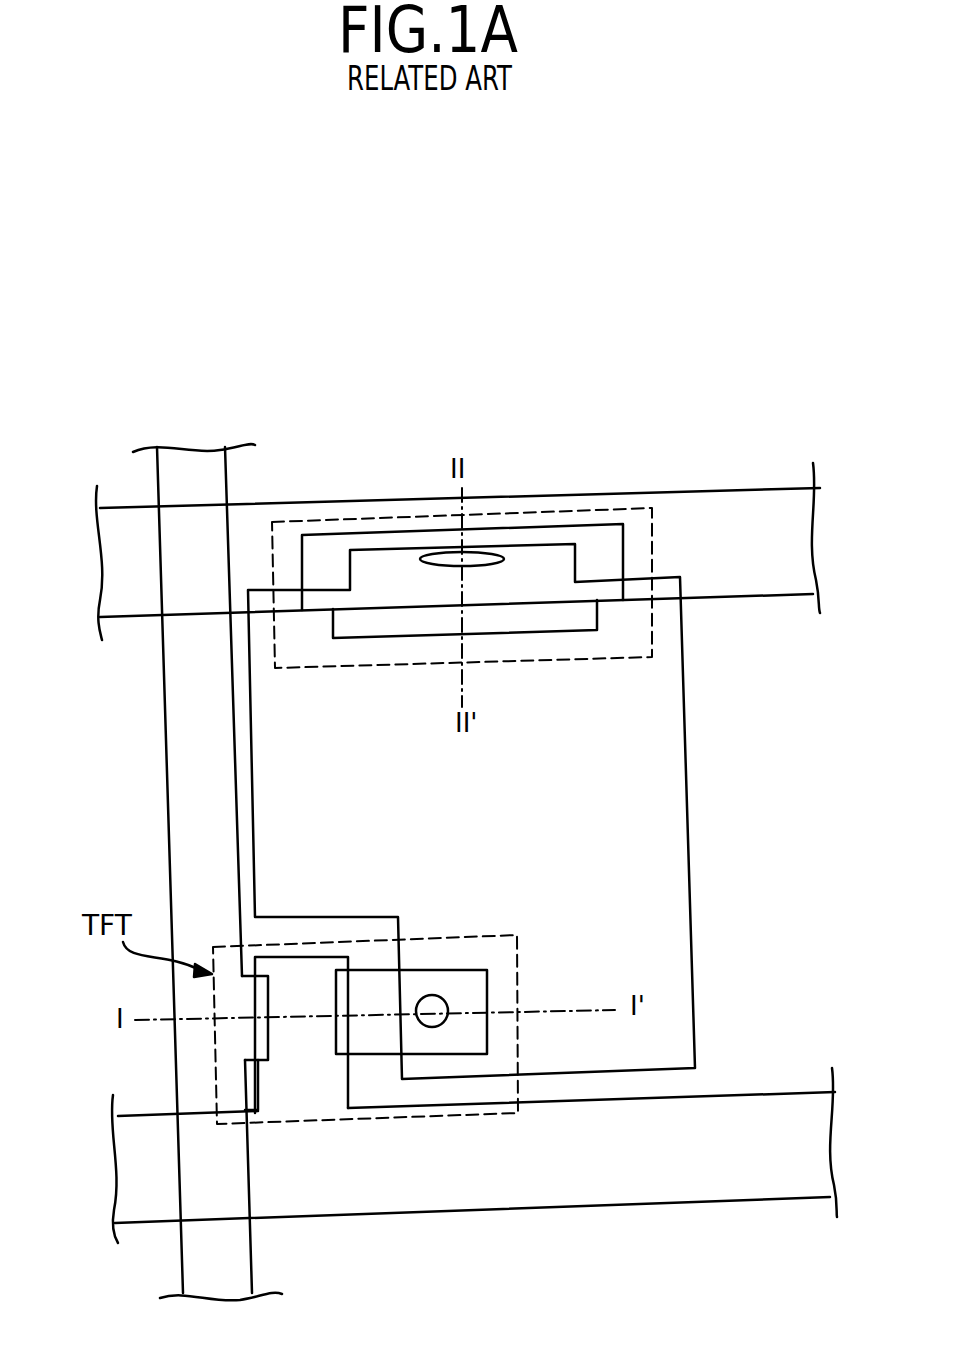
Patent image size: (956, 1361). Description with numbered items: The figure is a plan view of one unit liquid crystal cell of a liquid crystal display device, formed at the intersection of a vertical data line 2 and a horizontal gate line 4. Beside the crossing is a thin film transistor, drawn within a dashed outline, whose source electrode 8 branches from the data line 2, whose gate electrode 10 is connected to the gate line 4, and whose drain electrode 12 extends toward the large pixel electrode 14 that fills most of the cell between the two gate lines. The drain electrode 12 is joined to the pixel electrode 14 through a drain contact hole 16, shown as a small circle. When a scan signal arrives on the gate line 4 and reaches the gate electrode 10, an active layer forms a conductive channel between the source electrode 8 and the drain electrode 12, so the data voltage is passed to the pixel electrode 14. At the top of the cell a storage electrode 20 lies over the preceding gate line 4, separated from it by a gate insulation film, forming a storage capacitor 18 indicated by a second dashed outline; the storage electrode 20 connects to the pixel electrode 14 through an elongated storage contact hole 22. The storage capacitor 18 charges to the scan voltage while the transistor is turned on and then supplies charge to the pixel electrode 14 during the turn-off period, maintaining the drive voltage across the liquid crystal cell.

The data line 2 is at (235, 1262).
The gate line 4 is at (748, 507).
The source electrode 8 is at (266, 975).
The gate electrode 10 is at (300, 967).
The drain electrode 12 is at (472, 980).
The pixel electrode 14 is at (660, 800).
The drain contact hole 16 is at (432, 1000).
The storage capacitor 18 is at (658, 642).
The storage electrode 20 is at (605, 537).
The storage contact hole 22 is at (482, 557).